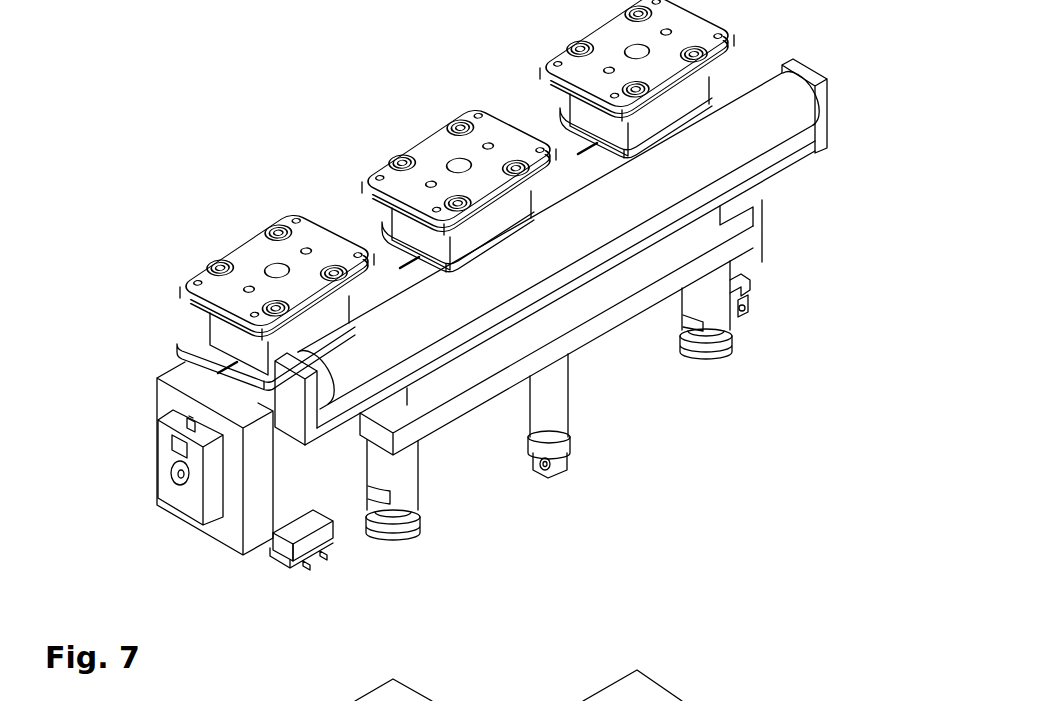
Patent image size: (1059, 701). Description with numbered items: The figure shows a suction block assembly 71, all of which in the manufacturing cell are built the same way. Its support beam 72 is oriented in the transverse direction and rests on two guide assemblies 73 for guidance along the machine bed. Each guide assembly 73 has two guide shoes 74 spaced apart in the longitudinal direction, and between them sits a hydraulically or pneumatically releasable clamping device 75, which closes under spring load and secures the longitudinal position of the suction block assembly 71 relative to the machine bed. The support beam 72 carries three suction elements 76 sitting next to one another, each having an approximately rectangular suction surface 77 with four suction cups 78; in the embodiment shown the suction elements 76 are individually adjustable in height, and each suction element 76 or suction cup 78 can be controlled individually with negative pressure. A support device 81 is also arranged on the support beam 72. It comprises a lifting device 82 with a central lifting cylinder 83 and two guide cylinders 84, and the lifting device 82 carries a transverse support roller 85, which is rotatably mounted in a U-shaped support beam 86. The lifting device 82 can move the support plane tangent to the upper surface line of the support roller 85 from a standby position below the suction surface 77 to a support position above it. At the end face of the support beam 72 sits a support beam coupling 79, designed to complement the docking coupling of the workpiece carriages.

The suction block assembly 71 is at (307, 197).
The support beam 72 is at (225, 535).
The guide assembly 73 is at (272, 565).
The guide shoe 74 is at (300, 563).
The clamping device 75 is at (267, 548).
The suction element 76 is at (218, 333).
The suction surface 77 is at (249, 245).
The suction cup 78 is at (401, 160).
The support beam coupling 79 is at (178, 474).
The support device 81 is at (428, 525).
The lifting device 82 is at (522, 462).
The lifting cylinder 83 is at (545, 418).
The guide cylinder 84 is at (702, 302).
The support roller 85 is at (388, 323).
The U-shaped support beam 86 is at (460, 352).